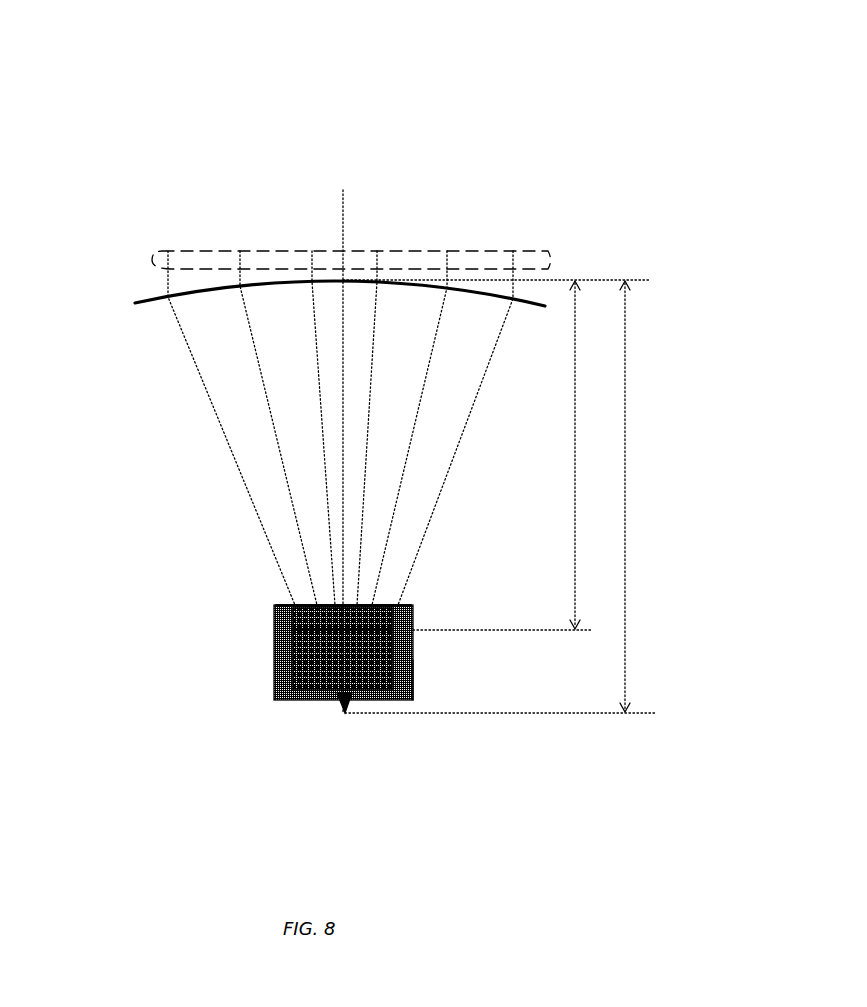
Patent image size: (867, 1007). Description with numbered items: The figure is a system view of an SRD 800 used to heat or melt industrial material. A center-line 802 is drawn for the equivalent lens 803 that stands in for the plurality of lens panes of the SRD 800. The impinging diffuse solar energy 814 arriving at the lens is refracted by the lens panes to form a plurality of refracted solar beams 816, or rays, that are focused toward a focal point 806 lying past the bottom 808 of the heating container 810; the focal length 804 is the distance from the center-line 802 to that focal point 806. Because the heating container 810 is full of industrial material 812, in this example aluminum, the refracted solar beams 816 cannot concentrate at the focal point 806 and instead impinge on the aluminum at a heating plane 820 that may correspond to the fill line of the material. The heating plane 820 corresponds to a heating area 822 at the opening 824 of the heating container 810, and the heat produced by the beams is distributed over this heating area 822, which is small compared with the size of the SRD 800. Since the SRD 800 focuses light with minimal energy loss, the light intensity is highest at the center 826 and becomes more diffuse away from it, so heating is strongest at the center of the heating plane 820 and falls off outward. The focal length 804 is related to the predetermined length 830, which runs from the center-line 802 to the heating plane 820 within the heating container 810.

The SRD 800 is at (727, 147).
The center-line 802 is at (608, 280).
The equivalent lens 803 is at (138, 313).
The focal length 804 is at (627, 530).
The focal point 806 is at (345, 705).
The bottom 808 is at (274, 675).
The heating container 810 is at (413, 683).
The industrial material 812 is at (280, 650).
The impinging diffuse solar energy 814 is at (540, 258).
The refracted solar beams 816 is at (208, 415).
The heating plane 820 is at (274, 620).
The heating area 822 is at (383, 606).
The opening 824 is at (305, 605).
The center 826 is at (343, 217).
The predetermined length 830 is at (570, 440).